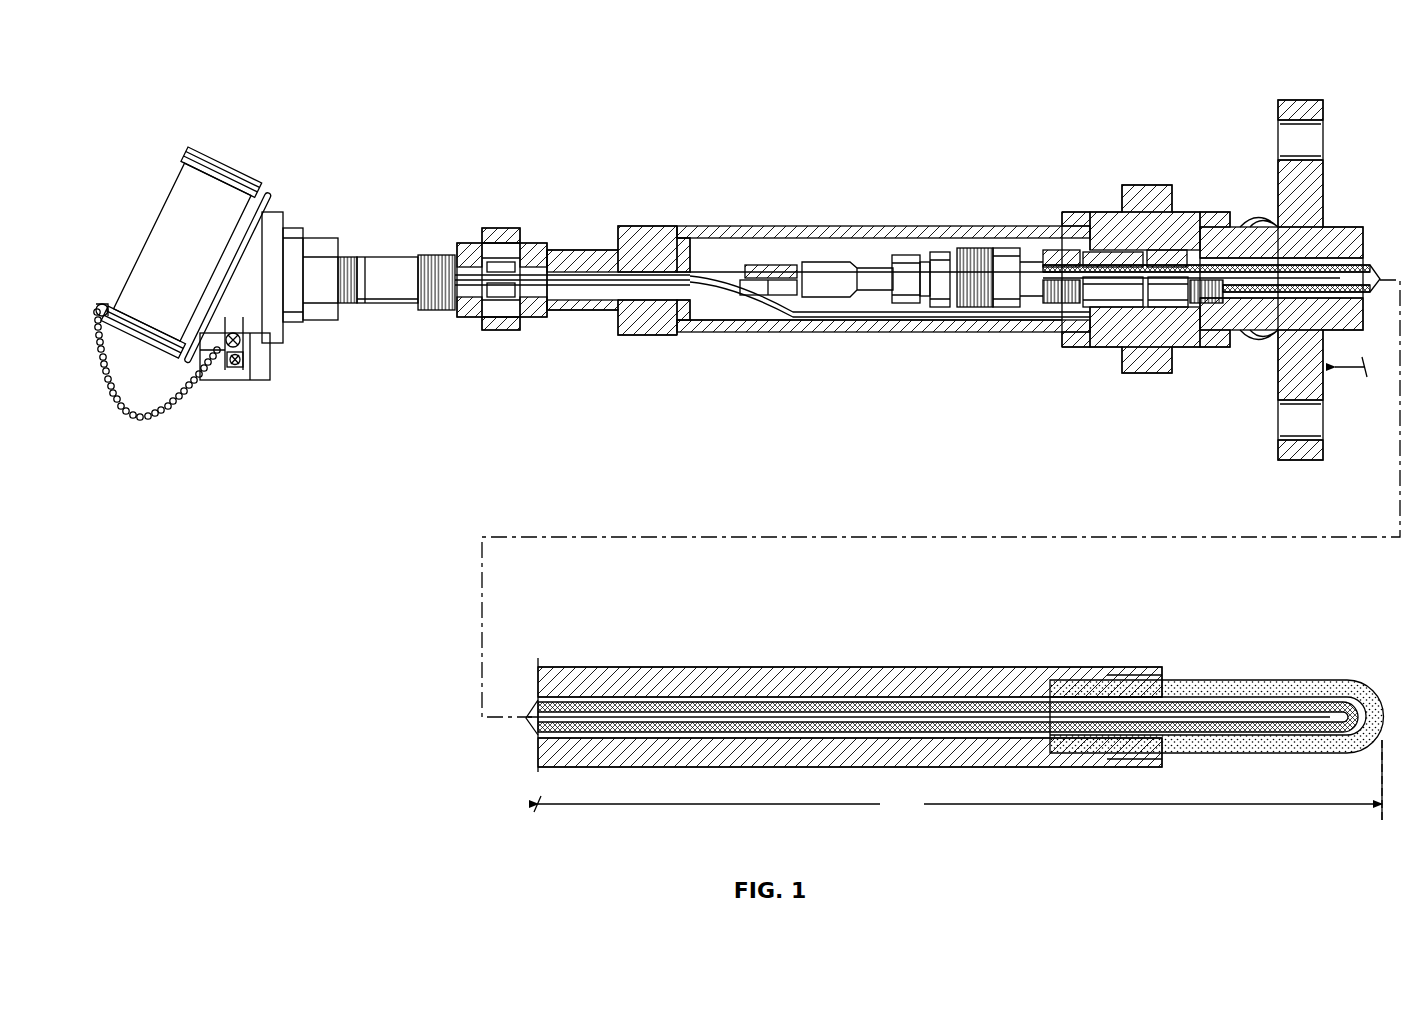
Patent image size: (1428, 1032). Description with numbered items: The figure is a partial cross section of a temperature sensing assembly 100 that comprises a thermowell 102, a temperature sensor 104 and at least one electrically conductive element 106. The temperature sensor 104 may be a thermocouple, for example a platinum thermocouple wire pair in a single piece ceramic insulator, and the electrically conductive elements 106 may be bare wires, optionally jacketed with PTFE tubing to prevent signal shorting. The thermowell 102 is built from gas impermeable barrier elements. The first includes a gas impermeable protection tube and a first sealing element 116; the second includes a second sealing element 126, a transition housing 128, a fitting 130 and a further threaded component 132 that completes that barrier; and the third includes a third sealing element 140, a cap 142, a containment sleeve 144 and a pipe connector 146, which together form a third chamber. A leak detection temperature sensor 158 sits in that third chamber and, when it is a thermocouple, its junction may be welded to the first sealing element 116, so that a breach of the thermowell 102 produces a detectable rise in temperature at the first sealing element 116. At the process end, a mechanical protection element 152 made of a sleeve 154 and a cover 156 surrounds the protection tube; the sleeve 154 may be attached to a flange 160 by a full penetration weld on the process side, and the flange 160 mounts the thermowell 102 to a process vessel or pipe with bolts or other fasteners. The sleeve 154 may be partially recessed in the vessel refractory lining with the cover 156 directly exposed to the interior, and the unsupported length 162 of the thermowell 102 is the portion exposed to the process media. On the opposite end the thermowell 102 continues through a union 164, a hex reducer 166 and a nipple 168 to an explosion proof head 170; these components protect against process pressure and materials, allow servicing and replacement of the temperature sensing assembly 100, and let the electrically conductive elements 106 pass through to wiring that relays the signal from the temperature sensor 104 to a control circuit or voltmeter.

The temperature sensing assembly 100 is at (483, 142).
The thermowell 102 is at (830, 194).
The temperature sensor 104 is at (992, 714).
The electrically conductive element 106 is at (722, 260).
The first sealing element 116 is at (1185, 305).
The second sealing element 126 is at (783, 296).
The transition housing 128 is at (875, 268).
The fitting 130 is at (906, 303).
The threaded fitting 132 is at (1000, 255).
The third sealing element 140 is at (510, 292).
The cap 142 is at (585, 247).
The containment sleeve 144 is at (766, 226).
The pipe connector 146 is at (1150, 190).
The mechanical protection element 152 is at (1116, 639).
The sleeve 154 is at (678, 667).
The cover 156 is at (1274, 680).
The leak detection temperature sensor 158 is at (745, 300).
The flange 160 is at (1300, 99).
The unsupported length 162 is at (958, 739).
The union 164 is at (500, 320).
The hex reducer 166 is at (442, 255).
The nipple 168 is at (384, 268).
The explosion proof head 170 is at (163, 270).